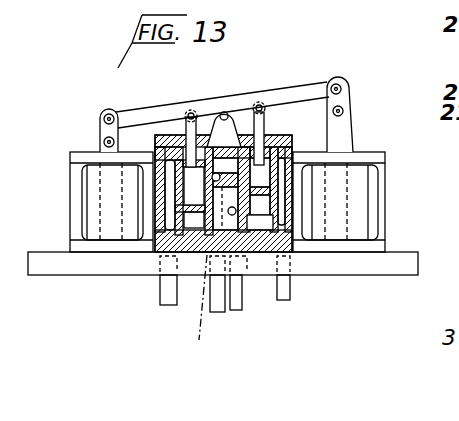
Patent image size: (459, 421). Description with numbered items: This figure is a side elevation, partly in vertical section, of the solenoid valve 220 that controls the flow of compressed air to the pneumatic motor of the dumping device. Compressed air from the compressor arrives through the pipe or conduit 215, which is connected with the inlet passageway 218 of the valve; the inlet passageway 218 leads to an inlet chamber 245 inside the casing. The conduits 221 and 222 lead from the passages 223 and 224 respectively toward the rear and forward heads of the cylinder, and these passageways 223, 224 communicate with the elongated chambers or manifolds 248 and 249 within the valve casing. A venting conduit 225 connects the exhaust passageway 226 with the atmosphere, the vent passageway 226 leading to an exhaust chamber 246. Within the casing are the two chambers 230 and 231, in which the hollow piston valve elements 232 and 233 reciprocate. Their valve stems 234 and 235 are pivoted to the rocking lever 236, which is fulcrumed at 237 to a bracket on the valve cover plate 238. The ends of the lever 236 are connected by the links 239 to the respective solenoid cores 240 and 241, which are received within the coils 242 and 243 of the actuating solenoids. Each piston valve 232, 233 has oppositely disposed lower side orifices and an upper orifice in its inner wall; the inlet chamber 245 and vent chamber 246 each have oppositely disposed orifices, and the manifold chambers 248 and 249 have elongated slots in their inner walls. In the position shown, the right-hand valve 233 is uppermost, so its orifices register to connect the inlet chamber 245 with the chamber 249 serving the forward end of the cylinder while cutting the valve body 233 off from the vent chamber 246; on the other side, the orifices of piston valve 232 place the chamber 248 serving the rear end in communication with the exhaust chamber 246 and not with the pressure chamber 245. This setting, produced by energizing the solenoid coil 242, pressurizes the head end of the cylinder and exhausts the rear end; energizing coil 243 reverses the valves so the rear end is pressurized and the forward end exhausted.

The pipe or conduit 215 is at (215, 297).
The inlet passageway 218 is at (218, 300).
The solenoid valve 220 is at (302, 125).
The conduit 221 is at (168, 306).
The conduit 222 is at (290, 292).
The passage 223 is at (160, 262).
The passage 224 is at (300, 262).
The venting conduit 225 is at (240, 307).
The exhaust passageway 226 is at (245, 262).
The chamber 230 is at (195, 230).
The chamber 231 is at (312, 222).
The hollow piston valve element 232 is at (190, 197).
The hollow piston valve element 233 is at (262, 209).
The valve stem 234 is at (185, 135).
The valve stem 235 is at (272, 110).
The rocking lever 236 is at (245, 103).
The fulcrum 237 is at (222, 105).
The valve cover plate 238 is at (157, 126).
The link 239 is at (100, 124).
The solenoid core 240 is at (100, 145).
The solenoid core 241 is at (345, 125).
The solenoid coil 242 is at (90, 177).
The solenoid coil 243 is at (360, 172).
The inlet chamber 245 is at (260, 134).
The exhaust chamber 246 is at (339, 202).
The manifold chamber 248 is at (165, 191).
The manifold chamber 249 is at (320, 152).